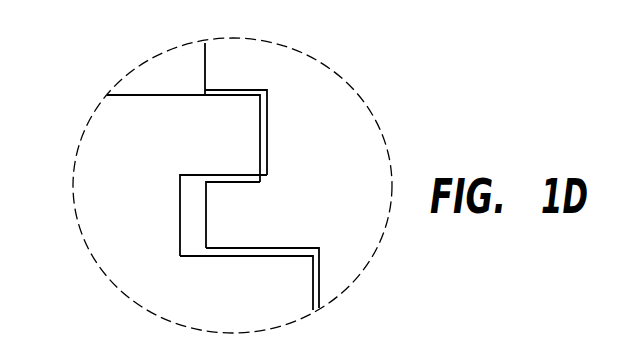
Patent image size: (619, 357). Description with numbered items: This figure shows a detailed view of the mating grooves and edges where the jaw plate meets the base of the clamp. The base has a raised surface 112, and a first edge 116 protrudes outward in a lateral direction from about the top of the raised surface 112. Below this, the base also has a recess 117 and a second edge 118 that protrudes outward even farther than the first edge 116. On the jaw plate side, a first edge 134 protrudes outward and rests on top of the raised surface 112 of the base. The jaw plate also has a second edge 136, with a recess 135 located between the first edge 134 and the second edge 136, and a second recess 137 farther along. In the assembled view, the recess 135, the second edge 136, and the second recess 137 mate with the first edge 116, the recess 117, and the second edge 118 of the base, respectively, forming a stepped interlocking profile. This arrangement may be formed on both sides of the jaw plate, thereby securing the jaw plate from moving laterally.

The raised surface 112 is at (137, 95).
The first edge 134 is at (205, 63).
The recess 135 is at (267, 135).
The second edge 136 is at (207, 206).
The second recess 137 is at (320, 263).
The first edge 116 is at (258, 150).
The recess 117 is at (180, 215).
The second edge 118 is at (312, 283).